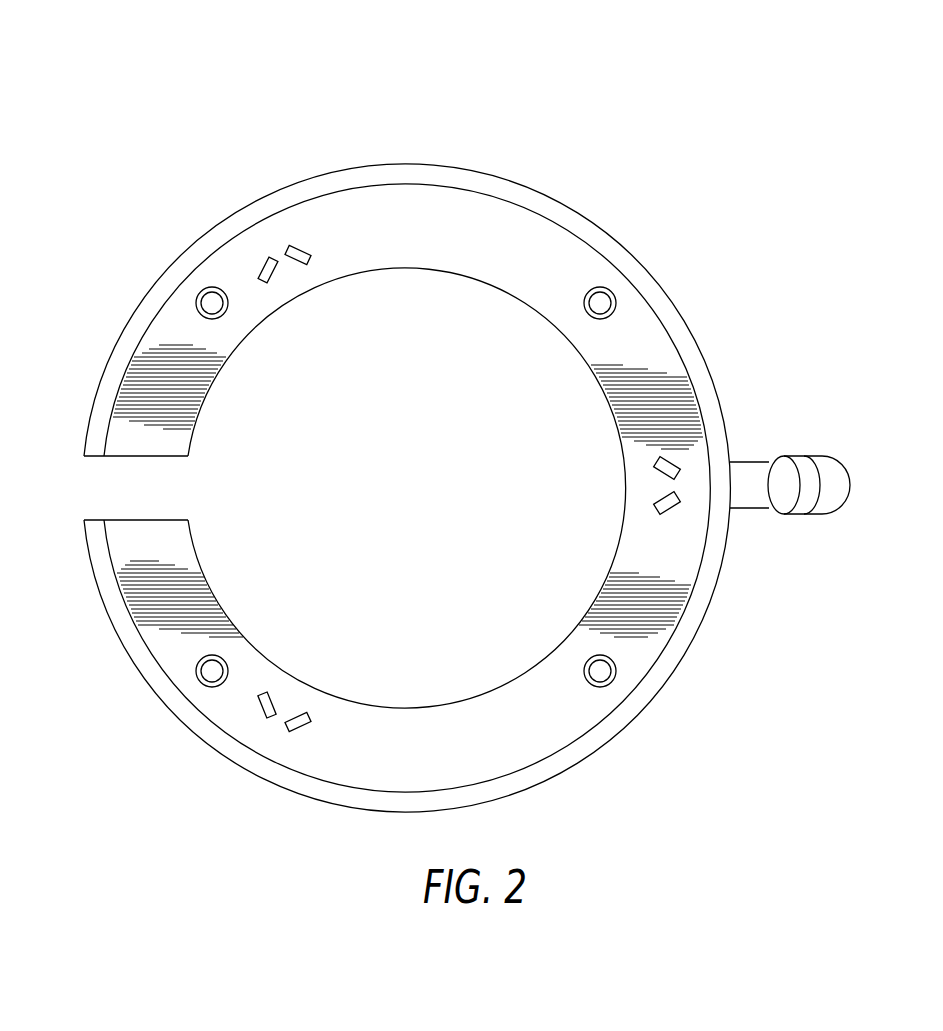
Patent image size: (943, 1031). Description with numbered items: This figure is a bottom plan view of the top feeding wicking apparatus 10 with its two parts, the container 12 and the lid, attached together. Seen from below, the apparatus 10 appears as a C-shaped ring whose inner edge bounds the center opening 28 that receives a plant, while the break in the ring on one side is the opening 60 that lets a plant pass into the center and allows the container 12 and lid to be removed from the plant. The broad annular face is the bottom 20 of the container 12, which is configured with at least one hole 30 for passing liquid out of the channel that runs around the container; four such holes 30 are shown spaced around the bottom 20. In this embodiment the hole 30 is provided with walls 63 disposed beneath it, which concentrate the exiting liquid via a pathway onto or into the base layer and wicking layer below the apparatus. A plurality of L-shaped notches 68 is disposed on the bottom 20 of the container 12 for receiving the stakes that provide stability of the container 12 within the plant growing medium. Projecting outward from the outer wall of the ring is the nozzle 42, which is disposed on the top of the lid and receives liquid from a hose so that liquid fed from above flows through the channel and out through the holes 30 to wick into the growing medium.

The top feeding wicking apparatus 10 is at (190, 133).
The container 12 is at (672, 720).
The bottom 20 is at (172, 596).
The center opening 28 is at (416, 500).
The hole 30 is at (598, 303).
The nozzle 42 is at (800, 514).
The opening 60 is at (103, 492).
The walls 63 is at (197, 670).
The L-shaped notches 68 is at (290, 250).